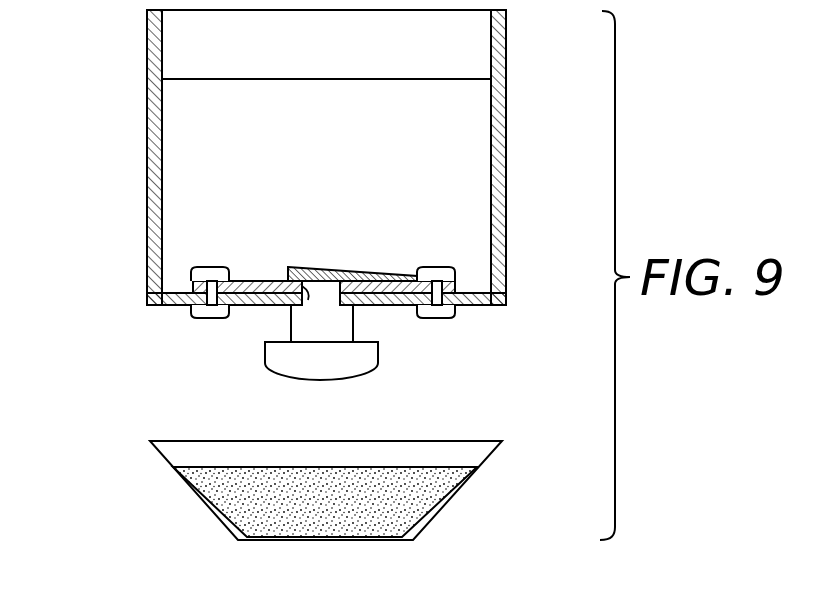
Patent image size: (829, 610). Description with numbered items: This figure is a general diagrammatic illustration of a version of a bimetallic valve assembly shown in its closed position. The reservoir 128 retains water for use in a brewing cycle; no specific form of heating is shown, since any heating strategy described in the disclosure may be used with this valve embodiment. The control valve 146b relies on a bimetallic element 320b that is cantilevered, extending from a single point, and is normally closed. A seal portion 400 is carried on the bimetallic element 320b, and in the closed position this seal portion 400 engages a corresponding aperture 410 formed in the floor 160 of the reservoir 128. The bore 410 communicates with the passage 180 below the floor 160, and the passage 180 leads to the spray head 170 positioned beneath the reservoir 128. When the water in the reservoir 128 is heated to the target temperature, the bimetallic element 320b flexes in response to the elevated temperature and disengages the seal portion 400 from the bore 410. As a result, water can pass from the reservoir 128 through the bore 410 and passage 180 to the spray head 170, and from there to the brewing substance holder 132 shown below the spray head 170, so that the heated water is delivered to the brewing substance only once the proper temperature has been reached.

The reservoir 128 is at (147, 125).
The control valve 146b is at (207, 236).
The floor 160 is at (467, 293).
The seal portion 400 is at (320, 288).
The bimetallic element 320b is at (325, 268).
The aperture 410 is at (302, 288).
The passage 180 is at (353, 330).
The spray head 170 is at (372, 368).
The brewing substance holder 132 is at (190, 488).